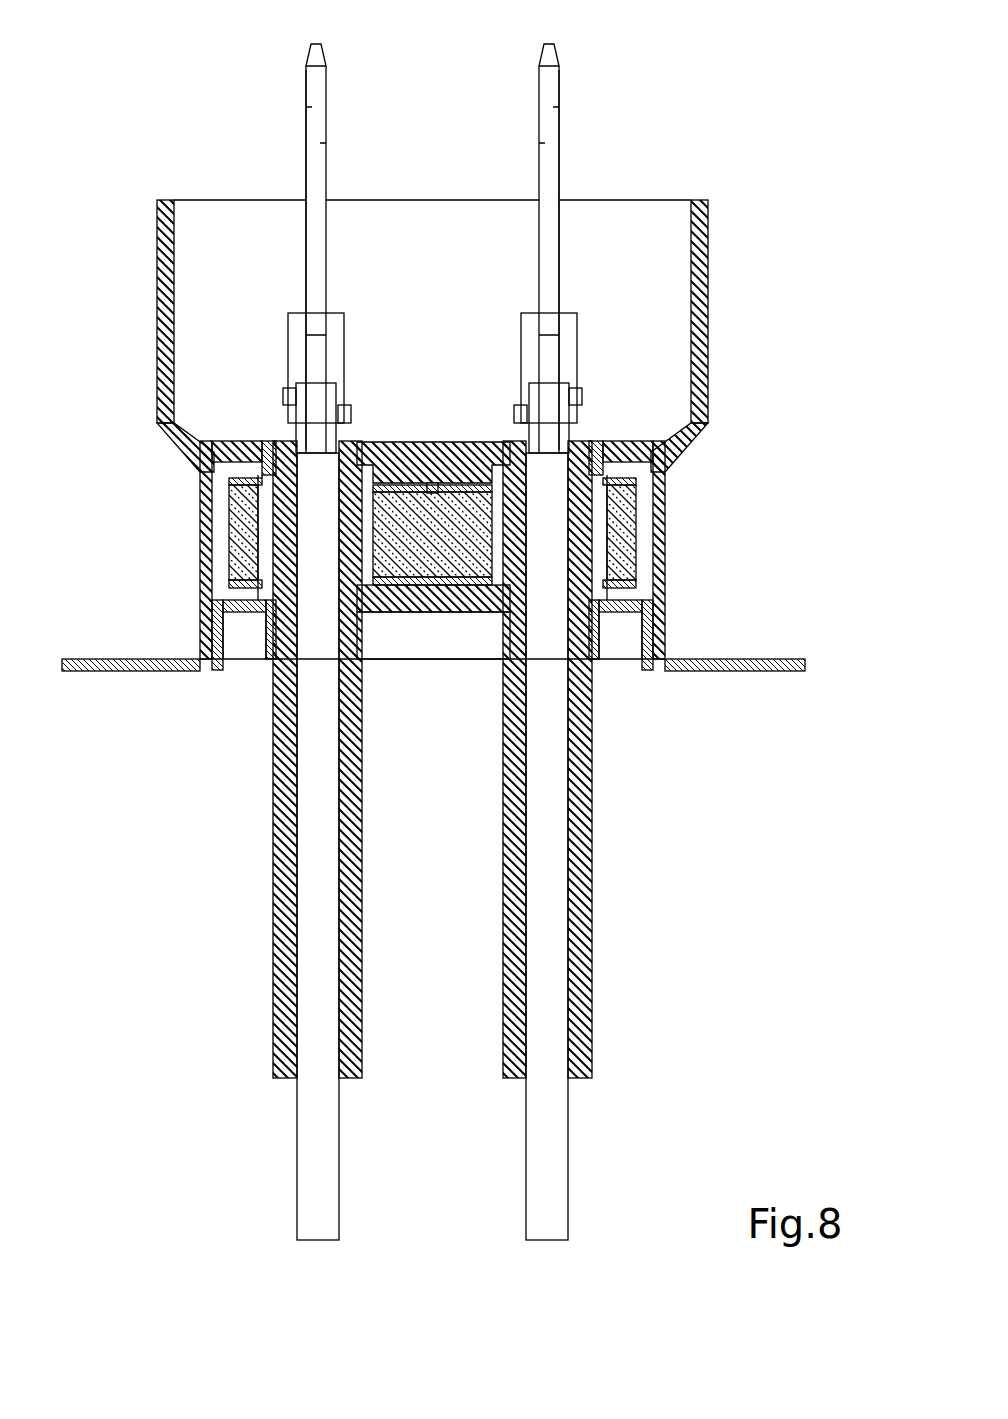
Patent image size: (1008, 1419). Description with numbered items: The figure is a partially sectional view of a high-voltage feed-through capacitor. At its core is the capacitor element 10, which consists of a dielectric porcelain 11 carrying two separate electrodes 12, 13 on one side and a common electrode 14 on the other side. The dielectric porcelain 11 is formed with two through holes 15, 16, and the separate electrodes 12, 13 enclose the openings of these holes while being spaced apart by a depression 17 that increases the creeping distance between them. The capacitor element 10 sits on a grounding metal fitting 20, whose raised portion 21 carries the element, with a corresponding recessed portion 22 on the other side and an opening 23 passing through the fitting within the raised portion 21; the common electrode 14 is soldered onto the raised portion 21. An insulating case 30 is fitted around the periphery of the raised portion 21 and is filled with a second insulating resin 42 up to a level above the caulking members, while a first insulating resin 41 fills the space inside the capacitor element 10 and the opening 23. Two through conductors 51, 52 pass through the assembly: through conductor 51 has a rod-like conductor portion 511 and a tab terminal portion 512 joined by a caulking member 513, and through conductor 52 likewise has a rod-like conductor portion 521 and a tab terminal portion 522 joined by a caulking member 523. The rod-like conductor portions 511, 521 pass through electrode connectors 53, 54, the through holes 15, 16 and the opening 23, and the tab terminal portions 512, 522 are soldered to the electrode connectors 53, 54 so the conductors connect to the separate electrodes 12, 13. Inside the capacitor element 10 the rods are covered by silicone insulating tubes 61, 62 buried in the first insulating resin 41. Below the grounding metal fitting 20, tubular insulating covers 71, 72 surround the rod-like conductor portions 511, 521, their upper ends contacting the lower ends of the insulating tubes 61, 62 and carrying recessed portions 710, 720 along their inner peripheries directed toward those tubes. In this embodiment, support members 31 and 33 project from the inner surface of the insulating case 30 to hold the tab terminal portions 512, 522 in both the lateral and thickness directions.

The capacitor element 10 is at (645, 520).
The dielectric porcelain 11 is at (230, 530).
The separate electrode 12 is at (660, 467).
The separate electrode 13 is at (207, 467).
The common electrode 14 is at (460, 590).
The through hole 15 is at (655, 637).
The through hole 16 is at (214, 627).
The depression 17 is at (436, 484).
The grounding metal fitting 20 is at (770, 655).
The raised portion 21 is at (634, 580).
The recessed portion 22 is at (430, 656).
The opening 23 is at (640, 608).
The insulating case 30 is at (712, 198).
The support member 31 is at (572, 313).
The support member 33 is at (292, 313).
The first insulating resin 41 is at (410, 607).
The second insulating resin 42 is at (403, 445).
The through conductor 51 is at (562, 62).
The through conductor 52 is at (302, 62).
The electrode connector 53 is at (600, 448).
The electrode connector 54 is at (262, 448).
The insulating tube 61 is at (590, 605).
The insulating tube 62 is at (272, 605).
The insulating cover 71 is at (595, 862).
The insulating cover 72 is at (273, 862).
The rod-like conductor portion 511 is at (572, 1128).
The tab terminal portion 512 is at (558, 148).
The caulking member 513 is at (580, 397).
The rod-like conductor portion 521 is at (297, 1128).
The tab terminal portion 522 is at (306, 148).
The caulking member 523 is at (288, 397).
The recessed portion 710 is at (598, 602).
The recessed portion 720 is at (268, 600).